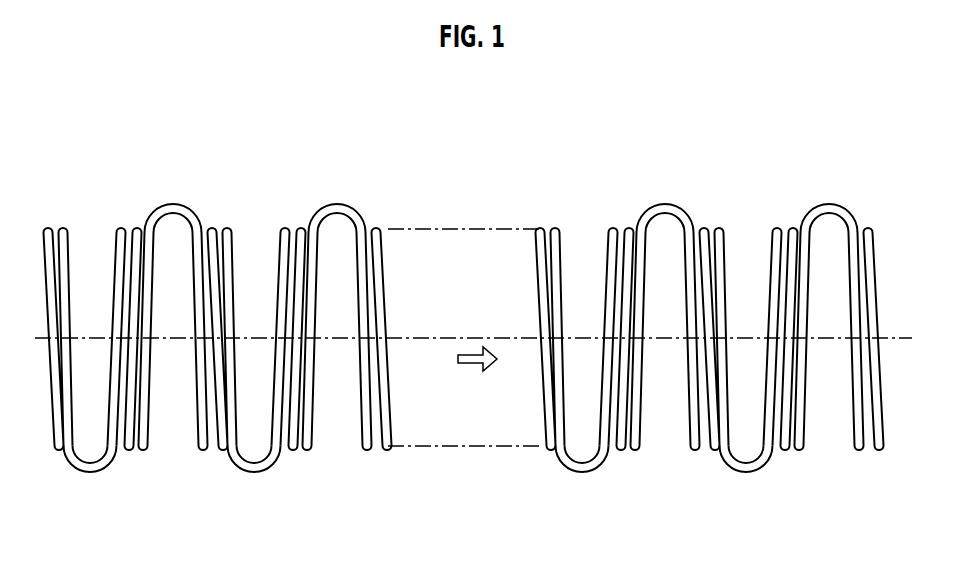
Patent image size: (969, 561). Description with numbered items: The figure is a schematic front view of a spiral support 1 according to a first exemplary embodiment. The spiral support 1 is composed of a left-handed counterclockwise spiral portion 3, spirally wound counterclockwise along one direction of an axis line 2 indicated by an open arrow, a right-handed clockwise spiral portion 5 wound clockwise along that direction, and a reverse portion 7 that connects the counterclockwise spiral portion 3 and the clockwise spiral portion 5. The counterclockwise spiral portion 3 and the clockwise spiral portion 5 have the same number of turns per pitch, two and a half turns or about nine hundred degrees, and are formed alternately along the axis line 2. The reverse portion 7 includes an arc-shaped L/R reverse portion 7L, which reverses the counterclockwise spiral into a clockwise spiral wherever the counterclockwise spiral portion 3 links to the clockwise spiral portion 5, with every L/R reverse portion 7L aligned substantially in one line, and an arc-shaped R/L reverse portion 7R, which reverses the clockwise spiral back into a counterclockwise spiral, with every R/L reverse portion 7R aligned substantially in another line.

The spiral support 1 is at (557, 136).
The axis line 2 is at (465, 335).
The counterclockwise spiral portion 3 is at (121, 226).
The clockwise spiral portion 5 is at (56, 226).
The reverse portion 7 is at (77, 458).
The L/R reverse portion 7L is at (178, 226).
The R/L reverse portion 7R is at (88, 453).